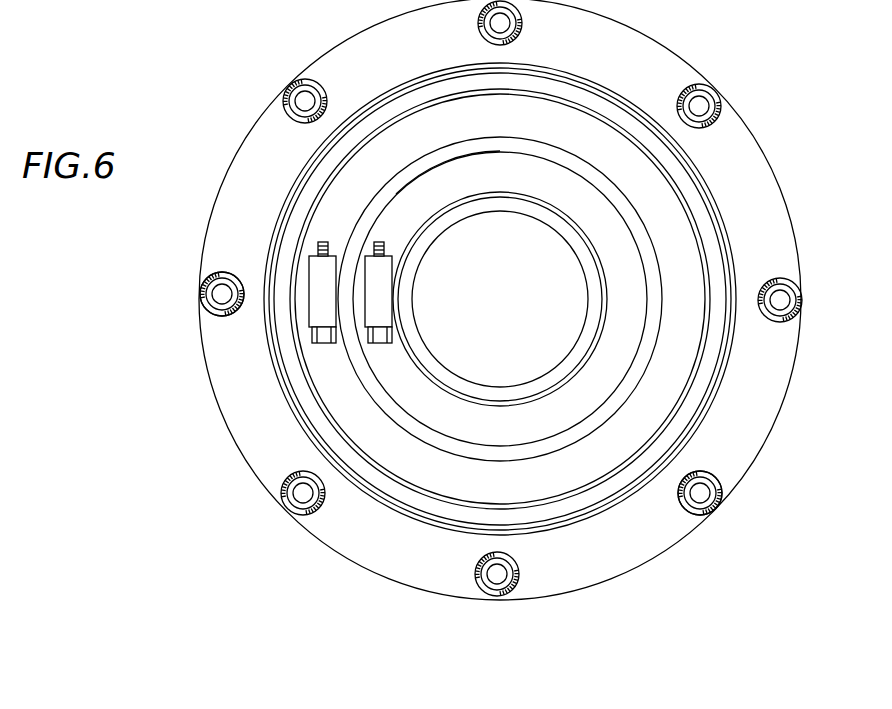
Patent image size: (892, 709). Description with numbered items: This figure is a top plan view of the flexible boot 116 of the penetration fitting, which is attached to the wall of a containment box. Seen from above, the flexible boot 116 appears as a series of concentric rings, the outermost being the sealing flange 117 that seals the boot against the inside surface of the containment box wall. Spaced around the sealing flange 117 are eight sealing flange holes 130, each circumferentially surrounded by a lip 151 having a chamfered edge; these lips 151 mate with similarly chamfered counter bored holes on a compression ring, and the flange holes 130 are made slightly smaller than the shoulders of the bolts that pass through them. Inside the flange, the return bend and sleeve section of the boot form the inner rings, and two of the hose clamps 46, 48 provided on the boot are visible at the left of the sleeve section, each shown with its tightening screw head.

The flexible boot 116 is at (291, 62).
The sealing flange 117 is at (647, 538).
The sealing flange holes 130 is at (222, 294).
The lips 151 is at (204, 306).
The first hose clamp 46 is at (317, 267).
The third hose clamp 48 is at (375, 265).